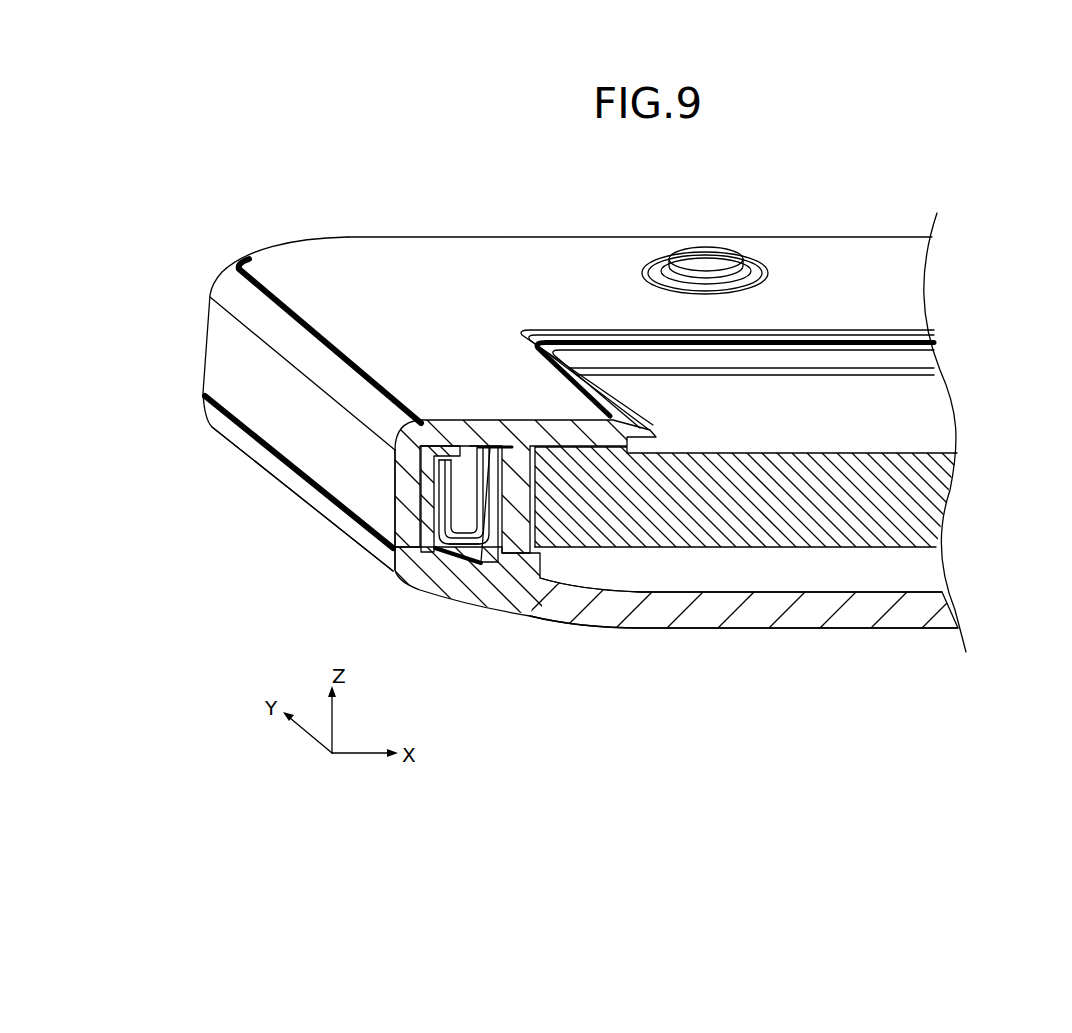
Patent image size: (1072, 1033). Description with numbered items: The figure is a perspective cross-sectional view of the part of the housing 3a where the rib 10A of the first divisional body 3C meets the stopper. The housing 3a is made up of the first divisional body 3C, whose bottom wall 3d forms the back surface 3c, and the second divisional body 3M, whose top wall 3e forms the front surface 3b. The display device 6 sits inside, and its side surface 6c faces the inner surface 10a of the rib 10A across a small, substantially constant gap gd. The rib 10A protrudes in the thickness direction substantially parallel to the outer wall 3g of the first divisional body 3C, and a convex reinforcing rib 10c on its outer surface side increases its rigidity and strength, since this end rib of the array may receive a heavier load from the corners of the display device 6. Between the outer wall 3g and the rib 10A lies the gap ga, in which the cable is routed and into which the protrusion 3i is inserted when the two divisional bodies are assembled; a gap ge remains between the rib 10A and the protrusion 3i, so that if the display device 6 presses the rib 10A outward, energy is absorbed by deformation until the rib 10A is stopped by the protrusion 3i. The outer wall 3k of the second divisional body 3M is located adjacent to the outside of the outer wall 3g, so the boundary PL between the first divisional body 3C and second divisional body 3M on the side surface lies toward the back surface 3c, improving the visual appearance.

The housing 3a is at (584, 441).
The second divisional body 3M is at (534, 234).
The first divisional body 3C is at (736, 634).
The front surface 3b is at (405, 262).
The top wall 3e is at (327, 316).
The back surface 3c is at (907, 630).
The bottom wall 3d is at (851, 620).
The outer wall 3g is at (412, 517).
The protrusion 3i is at (451, 446).
The outer wall 3k is at (338, 483).
The display device 6 is at (673, 553).
The side surface 6c is at (488, 443).
The rib 10A is at (520, 572).
The inner surface 10a is at (507, 561).
The reinforcing rib 10c is at (468, 558).
The gap ga is at (452, 550).
The gap gd is at (510, 446).
The gap ge is at (476, 446).
The boundary PL is at (240, 429).